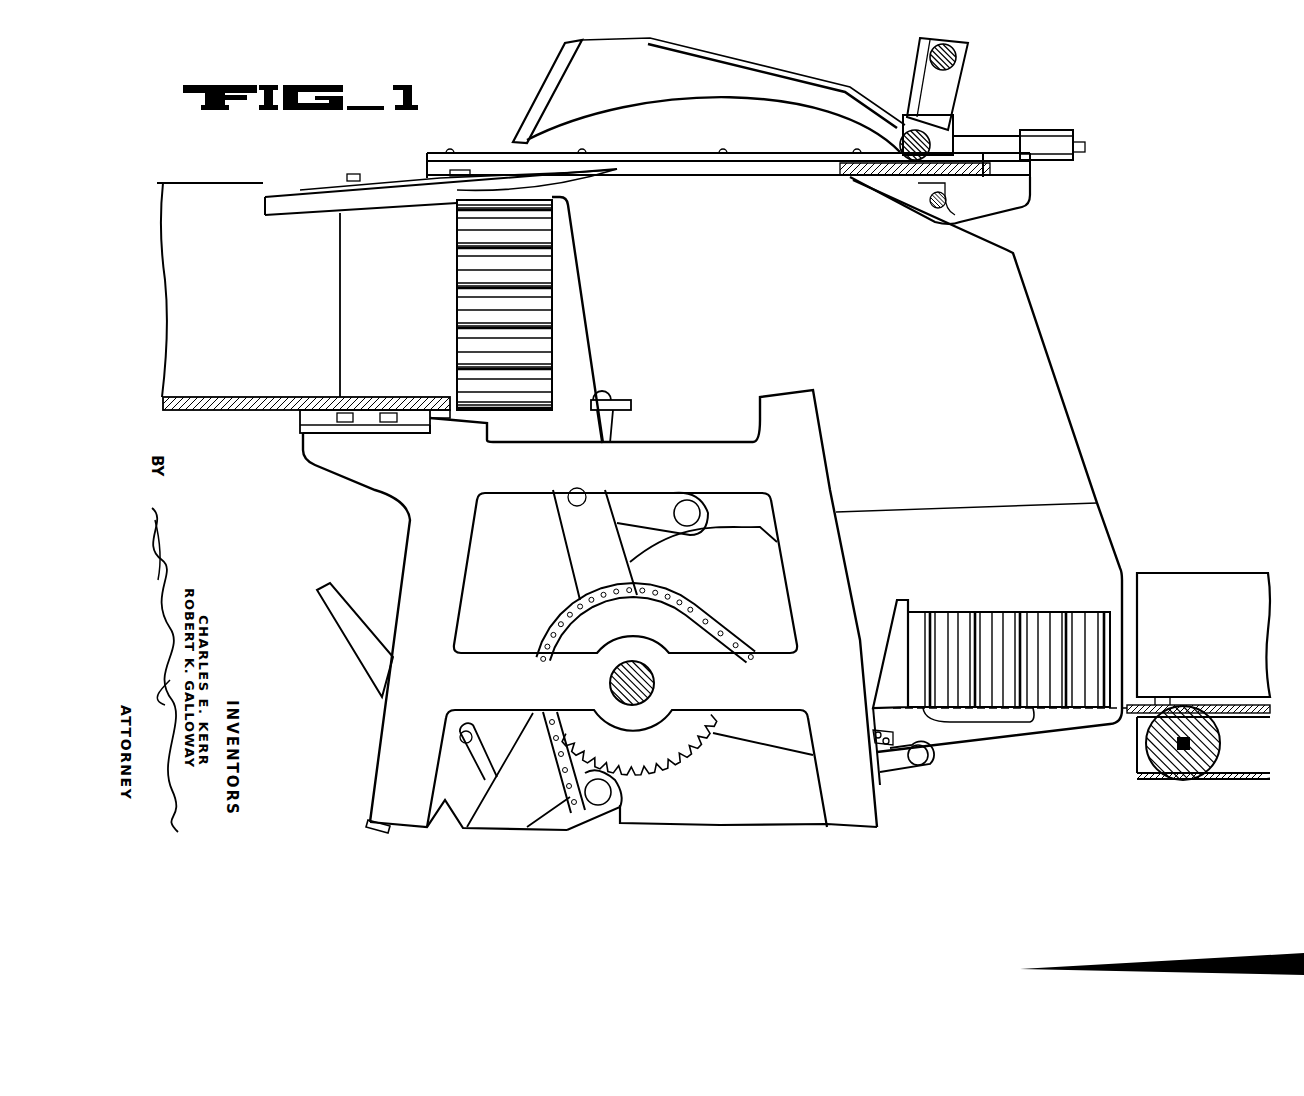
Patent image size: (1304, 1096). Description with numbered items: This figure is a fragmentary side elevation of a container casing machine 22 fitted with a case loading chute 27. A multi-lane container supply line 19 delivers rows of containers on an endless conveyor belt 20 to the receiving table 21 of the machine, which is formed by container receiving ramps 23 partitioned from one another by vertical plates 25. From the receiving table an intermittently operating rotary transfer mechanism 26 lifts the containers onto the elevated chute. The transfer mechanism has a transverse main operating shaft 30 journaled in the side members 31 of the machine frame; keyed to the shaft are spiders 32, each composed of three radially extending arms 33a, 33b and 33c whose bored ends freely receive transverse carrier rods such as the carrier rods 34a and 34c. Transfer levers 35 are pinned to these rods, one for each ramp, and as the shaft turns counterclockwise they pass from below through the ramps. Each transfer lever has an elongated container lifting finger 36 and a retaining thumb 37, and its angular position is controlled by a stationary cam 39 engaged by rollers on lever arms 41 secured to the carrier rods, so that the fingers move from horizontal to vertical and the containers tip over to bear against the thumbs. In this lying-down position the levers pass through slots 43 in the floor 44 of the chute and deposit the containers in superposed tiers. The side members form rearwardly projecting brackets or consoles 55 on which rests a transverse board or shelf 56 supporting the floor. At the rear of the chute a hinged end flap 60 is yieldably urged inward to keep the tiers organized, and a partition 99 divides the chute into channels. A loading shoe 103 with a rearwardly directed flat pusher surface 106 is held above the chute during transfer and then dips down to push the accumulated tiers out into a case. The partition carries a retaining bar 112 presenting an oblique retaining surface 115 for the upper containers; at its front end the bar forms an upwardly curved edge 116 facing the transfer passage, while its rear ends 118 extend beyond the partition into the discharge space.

The multi-lane container supply line 19 is at (1208, 598).
The endless conveyor belt 20 is at (1215, 777).
The receiving table 21 is at (1128, 722).
The container casing machine 22 is at (436, 518).
The container receiving ramps 23 is at (960, 722).
The vertical plates 25 is at (1009, 643).
The rotary transfer mechanism 26 is at (540, 618).
The case loading chute 27 is at (245, 380).
The main operating shaft 30 is at (645, 683).
The side members 31 is at (427, 568).
The spiders 32 is at (767, 738).
The radially extending arm 33a is at (582, 530).
The radially extending arm 33b is at (787, 727).
The radially extending arm 33c is at (528, 760).
The transverse carrier rod 34a is at (575, 492).
The transverse carrier rod 34c is at (500, 816).
The transfer levers 35 is at (582, 362).
The container lifting finger 36 is at (578, 266).
The retaining thumb 37 is at (513, 423).
The stationary cam 39 is at (703, 561).
The lever arms 41 is at (797, 803).
The slots 43 is at (452, 397).
The floor 44 is at (302, 397).
The brackets or consoles 55 is at (343, 458).
The transverse board or shelf 56 is at (392, 422).
The end flap 60 is at (210, 290).
The partition 99 is at (446, 305).
The loading shoe 103 is at (757, 86).
The pusher surface 106 is at (545, 88).
The retaining bar 112 is at (440, 198).
The oblique retaining surface 115 is at (337, 200).
The upwardly curved edge 116 is at (586, 175).
The rear ends 118 is at (265, 206).